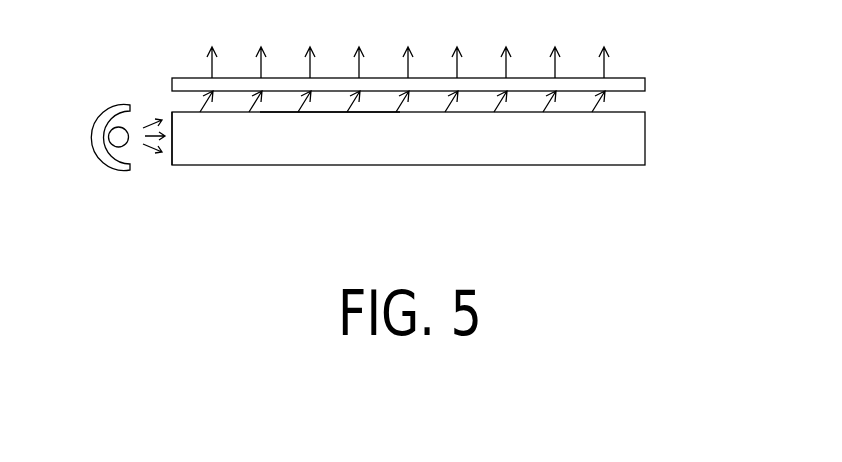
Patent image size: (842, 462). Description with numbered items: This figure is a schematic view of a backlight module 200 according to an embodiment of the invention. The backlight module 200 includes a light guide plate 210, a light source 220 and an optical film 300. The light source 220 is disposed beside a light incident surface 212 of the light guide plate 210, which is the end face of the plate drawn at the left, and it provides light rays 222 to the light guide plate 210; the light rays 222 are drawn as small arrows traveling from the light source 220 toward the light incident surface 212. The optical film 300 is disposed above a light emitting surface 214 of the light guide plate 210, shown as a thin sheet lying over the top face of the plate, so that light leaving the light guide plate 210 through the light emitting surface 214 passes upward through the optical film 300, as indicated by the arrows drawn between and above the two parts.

The backlight module 200 is at (717, 222).
The light guide plate 210 is at (635, 140).
The light incident surface 212 is at (172, 145).
The light emitting surface 214 is at (330, 112).
The light source 220 is at (114, 129).
The light rays 222 is at (150, 126).
The optical film 300 is at (640, 83).